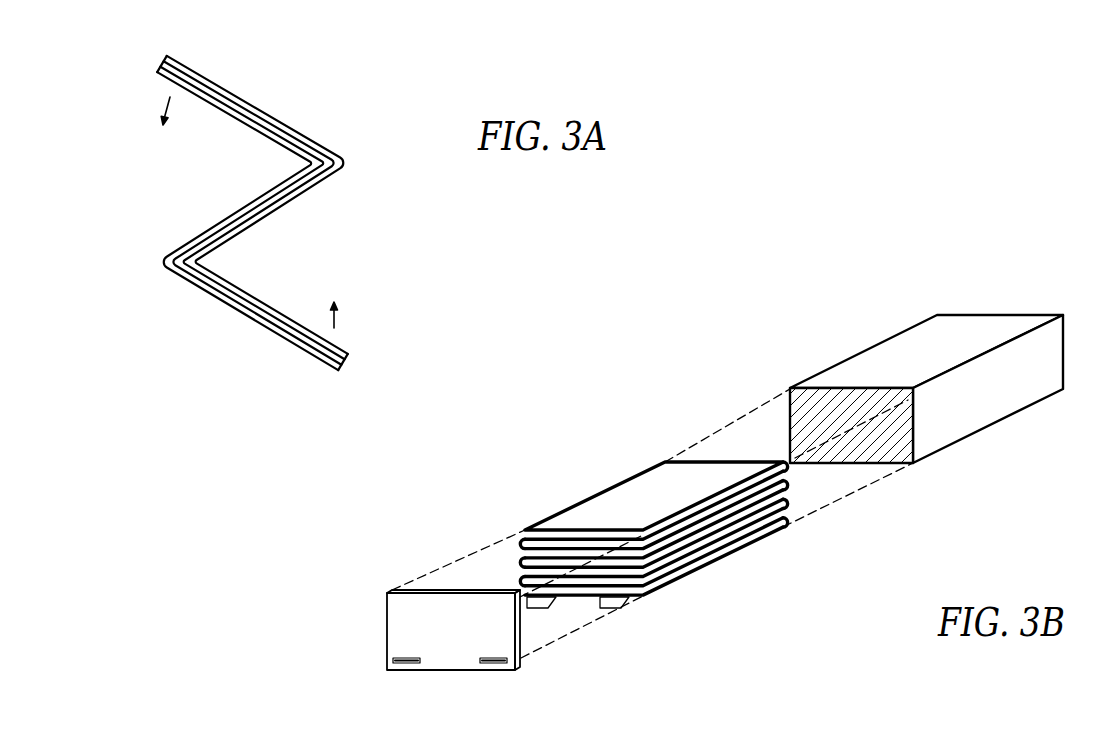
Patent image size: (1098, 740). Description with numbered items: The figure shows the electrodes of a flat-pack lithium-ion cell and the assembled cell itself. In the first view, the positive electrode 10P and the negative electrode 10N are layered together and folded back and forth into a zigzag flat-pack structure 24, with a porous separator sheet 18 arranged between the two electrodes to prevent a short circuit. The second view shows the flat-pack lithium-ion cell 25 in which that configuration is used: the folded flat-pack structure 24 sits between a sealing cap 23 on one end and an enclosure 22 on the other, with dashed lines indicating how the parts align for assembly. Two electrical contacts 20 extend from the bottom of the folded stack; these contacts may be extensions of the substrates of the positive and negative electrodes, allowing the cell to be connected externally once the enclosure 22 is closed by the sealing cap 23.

In FIG. 3A, the positive electrode 10P is at (234, 91).
In FIG. 3A, the negative electrode 10N is at (242, 116).
In FIG. 3A, the porous separator sheet 18 is at (343, 362).
In FIG. 3A, the flat-pack structure 24 is at (282, 201).
In FIG. 3B, the flat-pack structure 24 is at (671, 502).
In FIG. 3B, the flat-pack lithium-ion cell 25 is at (638, 364).
In FIG. 3B, the enclosure 22 is at (938, 361).
In FIG. 3B, the sealing cap 23 is at (463, 642).
In FIG. 3B, the electrical contacts 20 is at (543, 608).